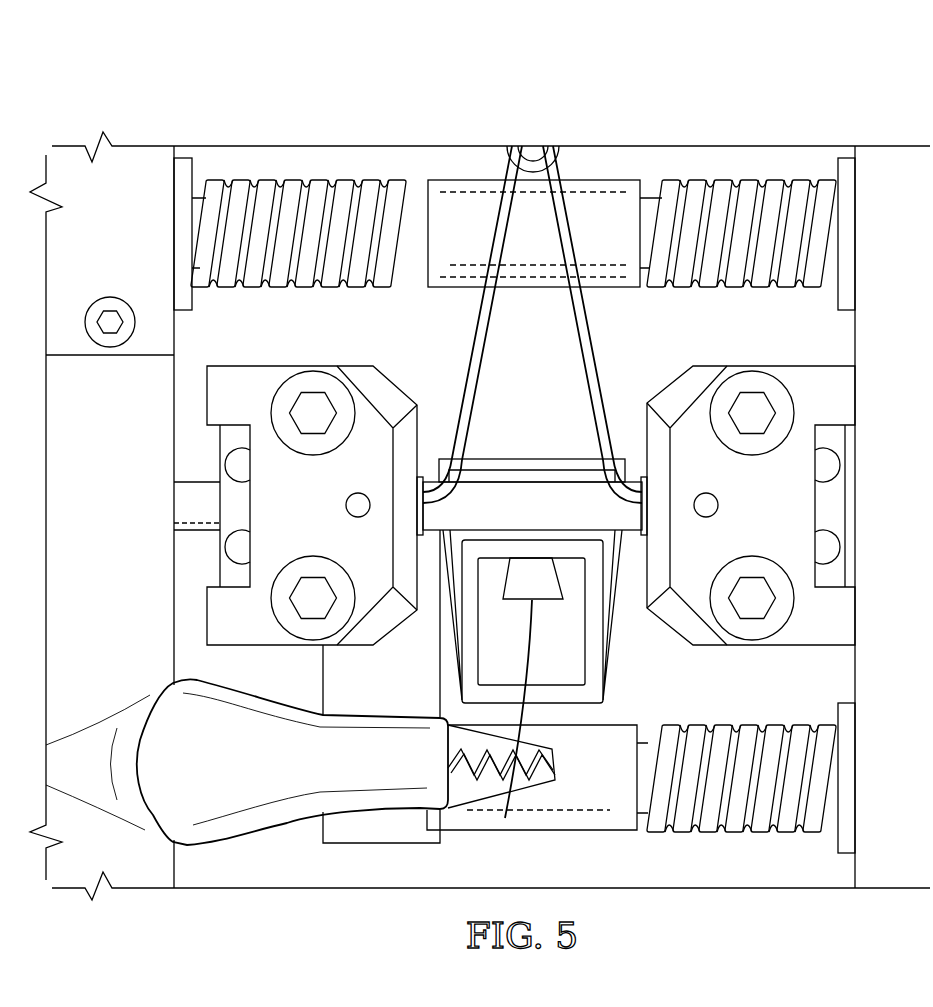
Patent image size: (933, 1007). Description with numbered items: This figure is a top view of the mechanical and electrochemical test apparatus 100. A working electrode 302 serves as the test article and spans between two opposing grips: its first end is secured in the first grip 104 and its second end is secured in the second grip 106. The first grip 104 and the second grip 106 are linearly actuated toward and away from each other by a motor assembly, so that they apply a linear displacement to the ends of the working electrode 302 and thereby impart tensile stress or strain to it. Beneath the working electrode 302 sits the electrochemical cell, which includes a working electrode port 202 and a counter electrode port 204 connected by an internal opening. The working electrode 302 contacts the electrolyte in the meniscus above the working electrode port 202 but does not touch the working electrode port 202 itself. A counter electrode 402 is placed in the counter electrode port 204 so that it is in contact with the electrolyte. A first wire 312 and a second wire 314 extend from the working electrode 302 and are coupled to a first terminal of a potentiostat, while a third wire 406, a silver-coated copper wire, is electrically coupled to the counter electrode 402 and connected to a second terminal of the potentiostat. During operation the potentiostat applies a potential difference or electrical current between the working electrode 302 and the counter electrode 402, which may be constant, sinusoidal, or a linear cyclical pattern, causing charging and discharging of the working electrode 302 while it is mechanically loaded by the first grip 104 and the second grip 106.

The test apparatus 100 is at (361, 88).
The first grip 104 is at (797, 377).
The second grip 106 is at (247, 378).
The working electrode port 202 is at (515, 458).
The counter electrode port 204 is at (593, 633).
The working electrode 302 is at (545, 493).
The first wire 312 is at (597, 347).
The second wire 314 is at (470, 350).
The counter electrode 402 is at (542, 588).
The third wire 406 is at (528, 713).